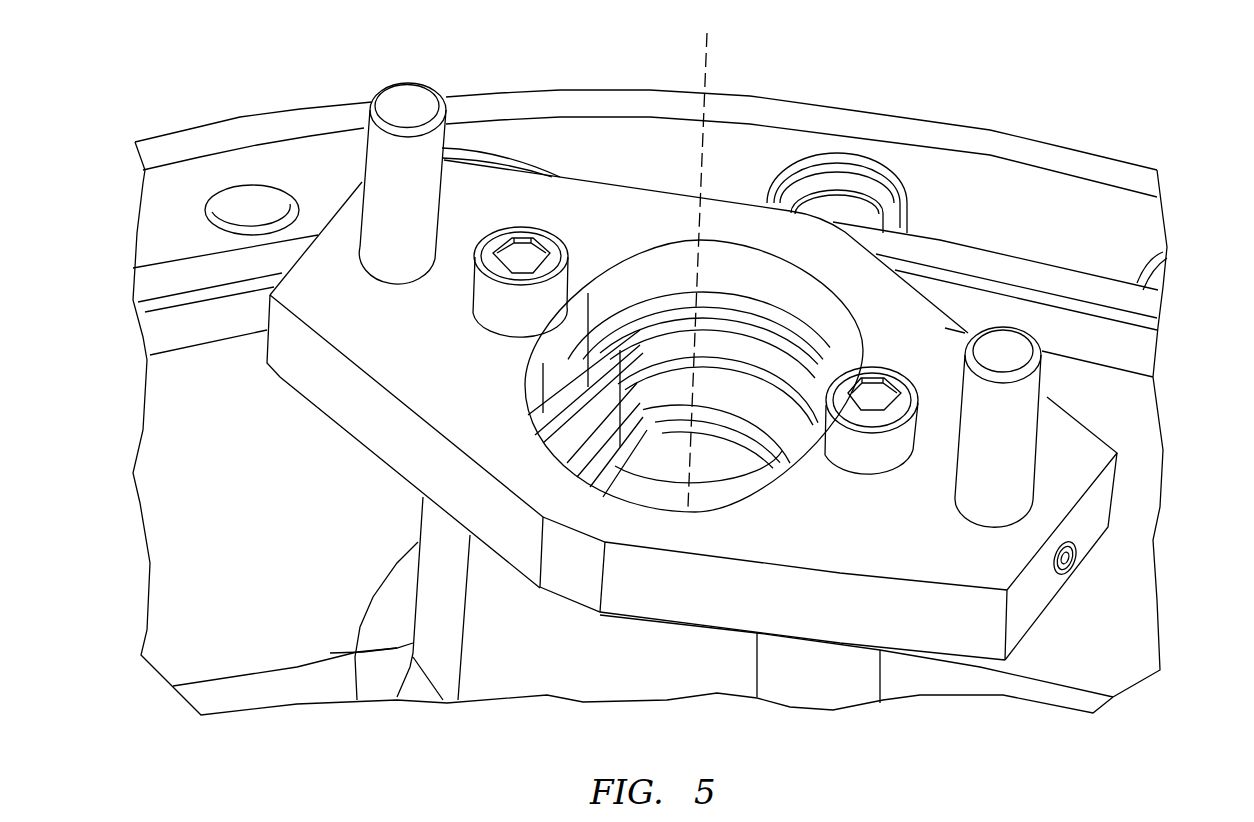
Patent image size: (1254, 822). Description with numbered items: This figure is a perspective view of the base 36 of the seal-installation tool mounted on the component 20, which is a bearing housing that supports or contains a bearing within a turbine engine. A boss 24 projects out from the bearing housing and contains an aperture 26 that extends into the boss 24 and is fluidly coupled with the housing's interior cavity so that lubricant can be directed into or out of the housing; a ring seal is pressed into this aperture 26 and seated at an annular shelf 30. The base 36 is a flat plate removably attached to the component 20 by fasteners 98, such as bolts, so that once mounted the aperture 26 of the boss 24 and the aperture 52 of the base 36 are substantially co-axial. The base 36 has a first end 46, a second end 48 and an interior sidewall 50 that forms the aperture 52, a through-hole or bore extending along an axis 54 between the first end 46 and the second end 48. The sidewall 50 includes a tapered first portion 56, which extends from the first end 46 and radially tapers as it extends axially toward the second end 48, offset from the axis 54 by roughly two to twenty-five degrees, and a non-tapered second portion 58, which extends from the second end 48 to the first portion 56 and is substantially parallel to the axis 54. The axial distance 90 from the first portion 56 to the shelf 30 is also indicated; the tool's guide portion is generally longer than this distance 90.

The component 20 is at (157, 575).
The boss 24 is at (450, 683).
The aperture 26 is at (722, 349).
The annular shelf 30 is at (592, 430).
The base 36 is at (1123, 462).
The first end 46 is at (1093, 447).
The second end 48 is at (1087, 553).
The interior sidewall 50 is at (842, 341).
The aperture 52 is at (628, 274).
The axis 54 is at (713, 50).
The tapered first portion 56 is at (596, 297).
The non-tapered second portion 58 is at (560, 383).
The axial distance 90 is at (625, 358).
The fasteners 98 is at (478, 313).